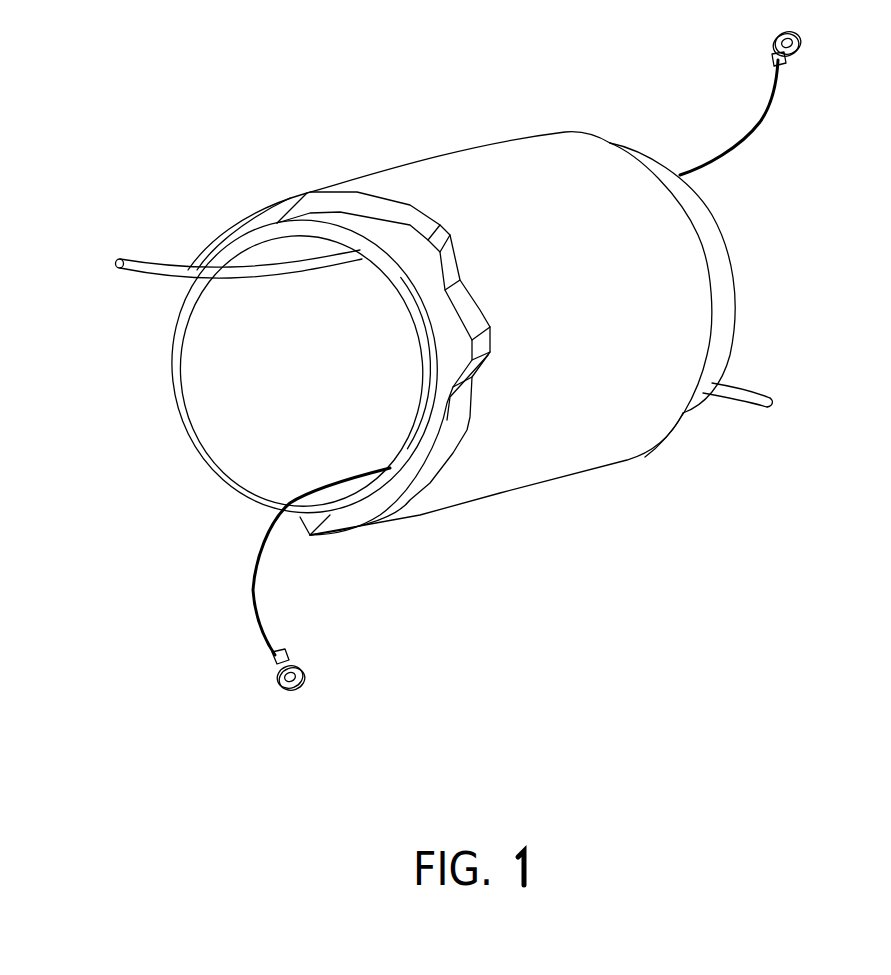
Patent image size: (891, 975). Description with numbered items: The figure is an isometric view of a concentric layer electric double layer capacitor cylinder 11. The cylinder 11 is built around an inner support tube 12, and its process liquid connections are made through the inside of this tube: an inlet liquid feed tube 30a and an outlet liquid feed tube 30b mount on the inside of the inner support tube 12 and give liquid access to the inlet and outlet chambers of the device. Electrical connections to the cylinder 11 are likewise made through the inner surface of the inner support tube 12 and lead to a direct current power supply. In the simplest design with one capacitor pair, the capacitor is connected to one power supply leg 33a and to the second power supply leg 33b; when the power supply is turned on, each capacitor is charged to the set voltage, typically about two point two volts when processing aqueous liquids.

The concentric layer electric double layer capacitor cylinder 11 is at (385, 162).
The inner support tube 12 is at (727, 290).
The inlet liquid feed tube 30a is at (150, 260).
The outlet liquid feed tube 30b is at (740, 418).
The first electrical lead with terminal 33a is at (247, 603).
The power supply leg 2 33b is at (760, 130).